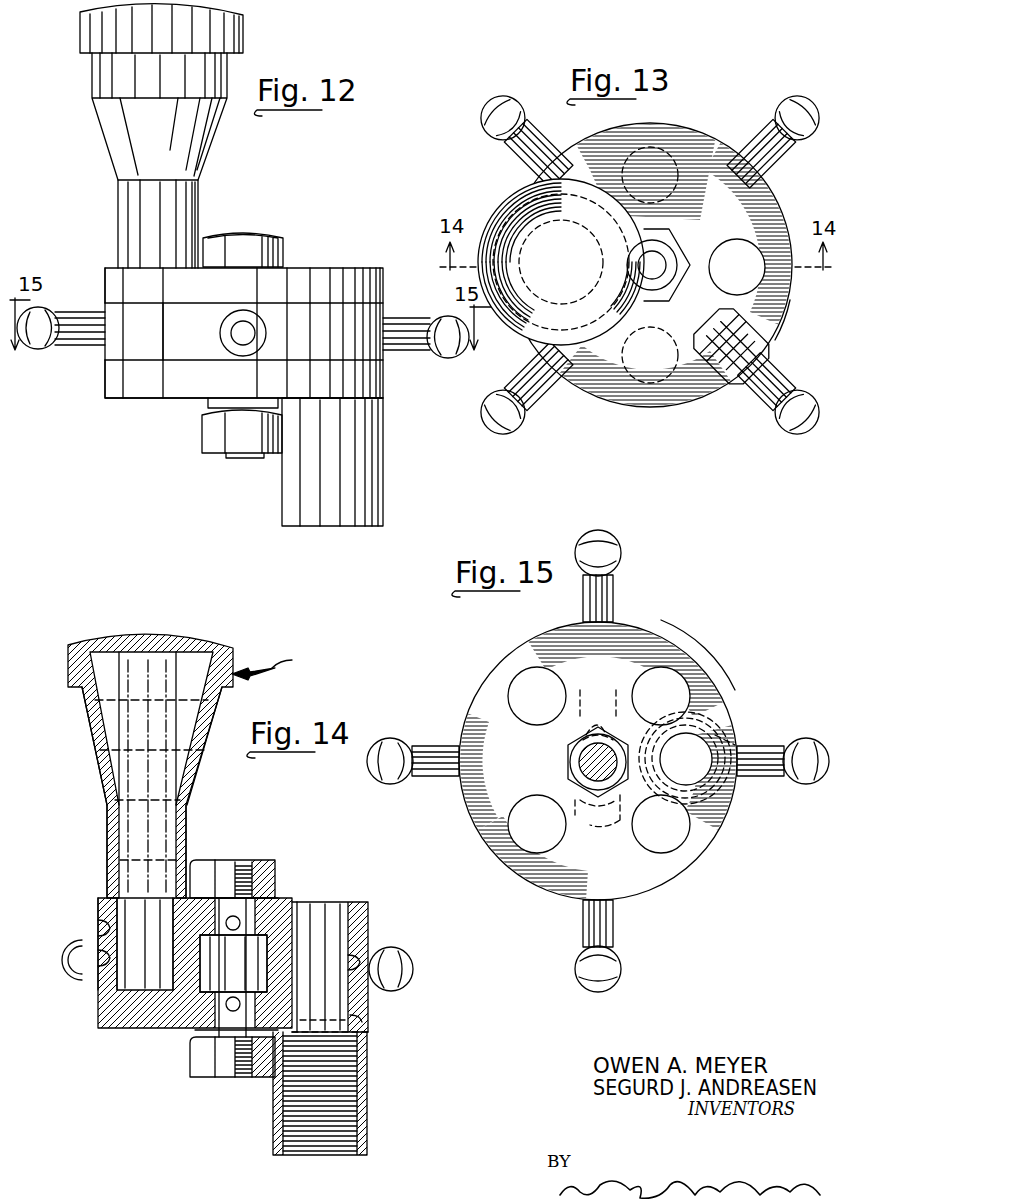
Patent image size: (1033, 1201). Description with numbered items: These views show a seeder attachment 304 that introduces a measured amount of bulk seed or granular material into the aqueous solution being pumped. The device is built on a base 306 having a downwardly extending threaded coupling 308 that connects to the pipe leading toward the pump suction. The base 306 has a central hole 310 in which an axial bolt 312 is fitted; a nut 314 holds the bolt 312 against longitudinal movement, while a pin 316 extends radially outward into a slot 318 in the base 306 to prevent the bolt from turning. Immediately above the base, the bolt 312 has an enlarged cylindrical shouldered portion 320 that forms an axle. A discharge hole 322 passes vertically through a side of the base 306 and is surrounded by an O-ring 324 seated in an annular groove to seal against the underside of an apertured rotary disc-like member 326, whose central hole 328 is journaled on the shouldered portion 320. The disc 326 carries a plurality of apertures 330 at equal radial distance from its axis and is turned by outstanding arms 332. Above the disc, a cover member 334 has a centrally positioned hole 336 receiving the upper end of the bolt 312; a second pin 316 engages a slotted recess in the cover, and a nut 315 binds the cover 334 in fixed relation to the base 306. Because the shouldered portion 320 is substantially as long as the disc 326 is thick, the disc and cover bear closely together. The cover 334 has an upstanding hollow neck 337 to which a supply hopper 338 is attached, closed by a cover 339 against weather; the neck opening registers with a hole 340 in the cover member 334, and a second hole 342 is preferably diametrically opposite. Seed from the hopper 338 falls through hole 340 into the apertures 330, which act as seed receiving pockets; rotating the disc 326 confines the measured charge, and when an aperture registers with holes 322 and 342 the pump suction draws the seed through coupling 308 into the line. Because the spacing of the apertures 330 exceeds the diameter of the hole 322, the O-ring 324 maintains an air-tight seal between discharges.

In FIG. 12, the seeder attachment 304 is at (339, 262).
In FIG. 13, the seeder attachment 304 is at (664, 414).
In FIG. 14, the seeder attachment 304 is at (262, 662).
In FIG. 15, the seeder attachment 304 is at (600, 760).
In FIG. 12, the base 306 is at (176, 398).
In FIG. 14, the base 306 is at (98, 1010).
In FIG. 12, the threaded coupling 308 is at (383, 462).
In FIG. 14, the threaded coupling 308 is at (367, 1100).
In FIG. 14, the central hole 310 is at (222, 1012).
In FIG. 12, the axial bolt 312 is at (235, 458).
In FIG. 13, the axial bolt 312 is at (658, 258).
In FIG. 14, the axial bolt 312 is at (232, 1085).
In FIG. 15, the axial bolt 312 is at (580, 760).
In FIG. 12, the nut 314 is at (202, 440).
In FIG. 14, the nut 314 is at (190, 1060).
In FIG. 15, the nut 314 is at (580, 705).
In FIG. 12, the nut 315 is at (278, 236).
In FIG. 13, the nut 315 is at (650, 228).
In FIG. 14, the nut 315 is at (262, 860).
In FIG. 14, the pin 316 is at (205, 895).
In FIG. 15, the pin 316 is at (580, 800).
In FIG. 15, the slot 318 is at (607, 822).
In FIG. 14, the enlarged cylindrical shouldered portion 320 is at (284, 912).
In FIG. 15, the enlarged cylindrical shouldered portion 320 is at (578, 748).
In FIG. 14, the discharge hole 322 is at (362, 1030).
In FIG. 15, the discharge hole 322 is at (722, 742).
In FIG. 14, the O-ring 324 is at (368, 1012).
In FIG. 15, the O-ring 324 is at (720, 795).
In FIG. 12, the apertured rotary disc-like member 326 is at (181, 360).
In FIG. 14, the apertured rotary disc-like member 326 is at (368, 942).
In FIG. 15, the apertured rotary disc-like member 326 is at (688, 668).
In FIG. 14, the central hole 328 is at (226, 1000).
In FIG. 15, the central hole 328 is at (592, 728).
In FIG. 13, the apertures 330 is at (686, 190).
In FIG. 14, the apertures 330 is at (100, 955).
In FIG. 15, the apertures 330 is at (520, 680).
In FIG. 12, the outstanding arms 332 is at (220, 336).
In FIG. 13, the outstanding arms 332 is at (484, 114).
In FIG. 14, the outstanding arms 332 is at (66, 976).
In FIG. 15, the outstanding arms 332 is at (622, 564).
In FIG. 12, the cover member 334 is at (104, 272).
In FIG. 13, the cover member 334 is at (773, 326).
In FIG. 14, the cover member 334 is at (98, 906).
In FIG. 14, the centrally positioned hole 336 is at (262, 915).
In FIG. 12, the upstanding hollow neck 337 is at (197, 200).
In FIG. 13, the upstanding hollow neck 337 is at (588, 222).
In FIG. 14, the upstanding hollow neck 337 is at (107, 840).
In FIG. 12, the supply hopper 338 is at (92, 70).
In FIG. 13, the supply hopper 338 is at (520, 338).
In FIG. 14, the supply hopper 338 is at (82, 720).
In FIG. 12, the cover 339 is at (244, 28).
In FIG. 13, the cover 339 is at (512, 196).
In FIG. 14, the cover 339 is at (112, 636).
In FIG. 14, the hole 340 is at (100, 925).
In FIG. 13, the hole 342 is at (765, 283).
In FIG. 14, the hole 342 is at (368, 912).